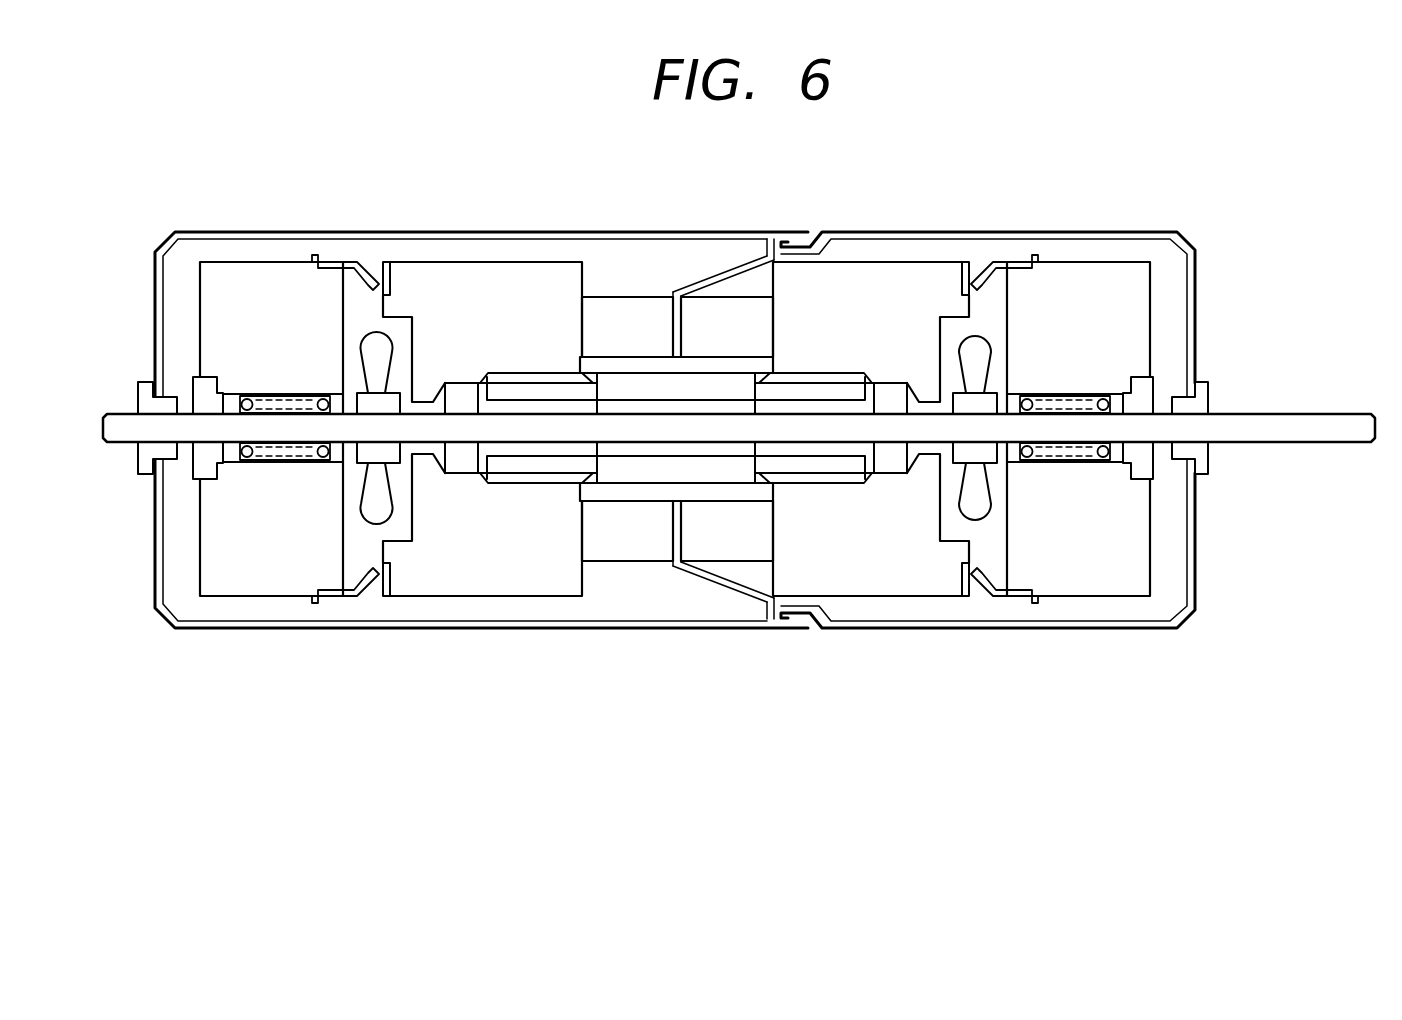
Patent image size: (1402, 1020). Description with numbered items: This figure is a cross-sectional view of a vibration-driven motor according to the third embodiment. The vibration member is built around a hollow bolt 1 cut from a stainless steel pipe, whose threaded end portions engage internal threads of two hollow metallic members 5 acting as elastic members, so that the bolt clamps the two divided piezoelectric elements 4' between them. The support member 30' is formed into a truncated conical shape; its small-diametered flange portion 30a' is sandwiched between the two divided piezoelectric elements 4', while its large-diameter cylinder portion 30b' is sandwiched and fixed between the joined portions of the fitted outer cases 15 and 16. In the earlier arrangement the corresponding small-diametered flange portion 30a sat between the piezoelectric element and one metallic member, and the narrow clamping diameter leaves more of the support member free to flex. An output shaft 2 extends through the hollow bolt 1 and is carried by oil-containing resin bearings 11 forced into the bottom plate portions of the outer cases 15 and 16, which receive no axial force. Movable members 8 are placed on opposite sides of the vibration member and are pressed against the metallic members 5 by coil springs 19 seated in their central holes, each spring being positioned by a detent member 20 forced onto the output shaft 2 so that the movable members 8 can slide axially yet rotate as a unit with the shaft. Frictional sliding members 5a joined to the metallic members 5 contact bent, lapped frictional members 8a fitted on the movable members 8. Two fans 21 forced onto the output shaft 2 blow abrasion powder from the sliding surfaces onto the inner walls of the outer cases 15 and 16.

The hollow bolt 1 is at (845, 470).
The output shaft 2 is at (1313, 443).
The piezoelectric elements 4' is at (676, 370).
The metallic members 5 is at (544, 275).
The frictional sliding members 5a is at (389, 262).
The movable members 8 is at (270, 272).
The frictional members 8a is at (357, 258).
The bearings 11 is at (143, 458).
The outer case 15 is at (1075, 630).
The outer case 16 is at (485, 630).
The coil springs 19 is at (273, 455).
The detent member 20 is at (193, 388).
The fans 21 is at (380, 513).
The small-diametered flange portion 30a is at (465, 471).
The small-diametered flange portion 30a' is at (642, 488).
The support member 30' is at (723, 479).
The cylinder portion 30b' is at (787, 471).